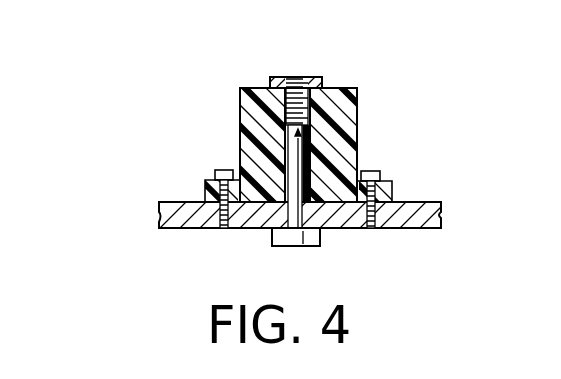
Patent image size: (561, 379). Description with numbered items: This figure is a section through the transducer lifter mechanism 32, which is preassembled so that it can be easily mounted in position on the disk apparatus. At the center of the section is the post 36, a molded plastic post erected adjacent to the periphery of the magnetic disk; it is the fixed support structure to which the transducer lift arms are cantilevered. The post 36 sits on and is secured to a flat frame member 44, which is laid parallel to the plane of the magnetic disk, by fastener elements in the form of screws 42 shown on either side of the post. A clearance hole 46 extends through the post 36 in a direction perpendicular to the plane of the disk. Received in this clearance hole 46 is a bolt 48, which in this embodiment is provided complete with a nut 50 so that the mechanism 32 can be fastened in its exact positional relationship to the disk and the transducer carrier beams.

The transducer lifter mechanism 32 is at (226, 77).
The post 36 is at (238, 132).
The screws 42 is at (218, 170).
The flat frame member 44 is at (172, 202).
The clearance hole 46 is at (306, 132).
The bolt 48 is at (307, 152).
The nut 50 is at (312, 77).